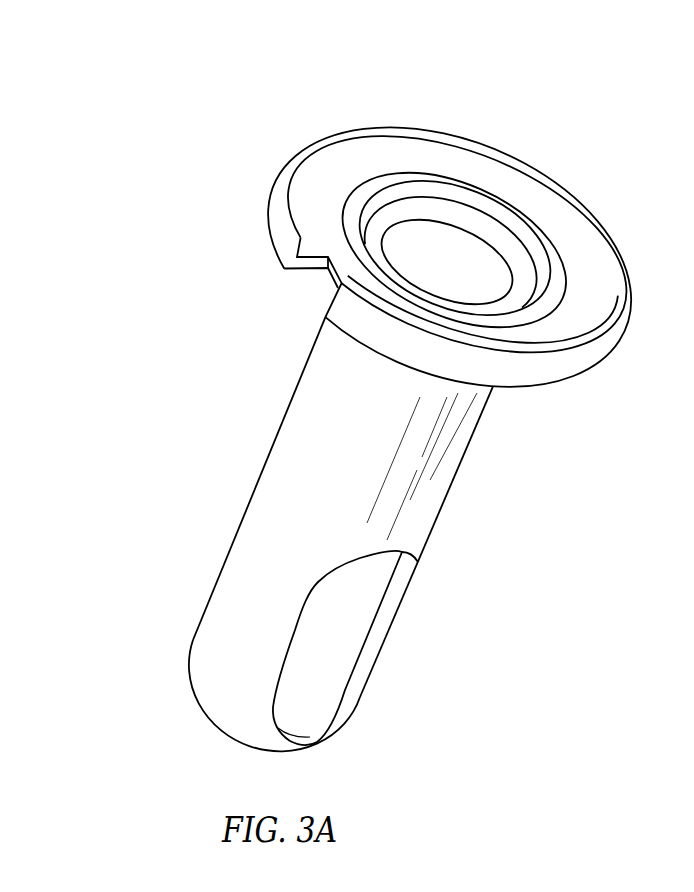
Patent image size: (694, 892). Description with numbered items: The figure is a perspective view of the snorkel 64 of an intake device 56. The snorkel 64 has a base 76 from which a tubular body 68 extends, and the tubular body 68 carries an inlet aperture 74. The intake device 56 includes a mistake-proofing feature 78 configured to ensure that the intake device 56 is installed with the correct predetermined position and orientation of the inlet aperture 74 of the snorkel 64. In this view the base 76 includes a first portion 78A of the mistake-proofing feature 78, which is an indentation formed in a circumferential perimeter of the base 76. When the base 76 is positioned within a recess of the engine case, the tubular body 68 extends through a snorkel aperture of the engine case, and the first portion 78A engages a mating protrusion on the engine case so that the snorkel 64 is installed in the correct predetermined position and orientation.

The intake device 56 is at (571, 142).
The base 76 is at (352, 116).
The mistake-proofing feature 78 is at (308, 291).
The first portion of the mistake-proofing feature 78A is at (312, 278).
The snorkel 64 is at (500, 438).
The tubular body 68 is at (450, 488).
The inlet aperture 74 is at (378, 674).